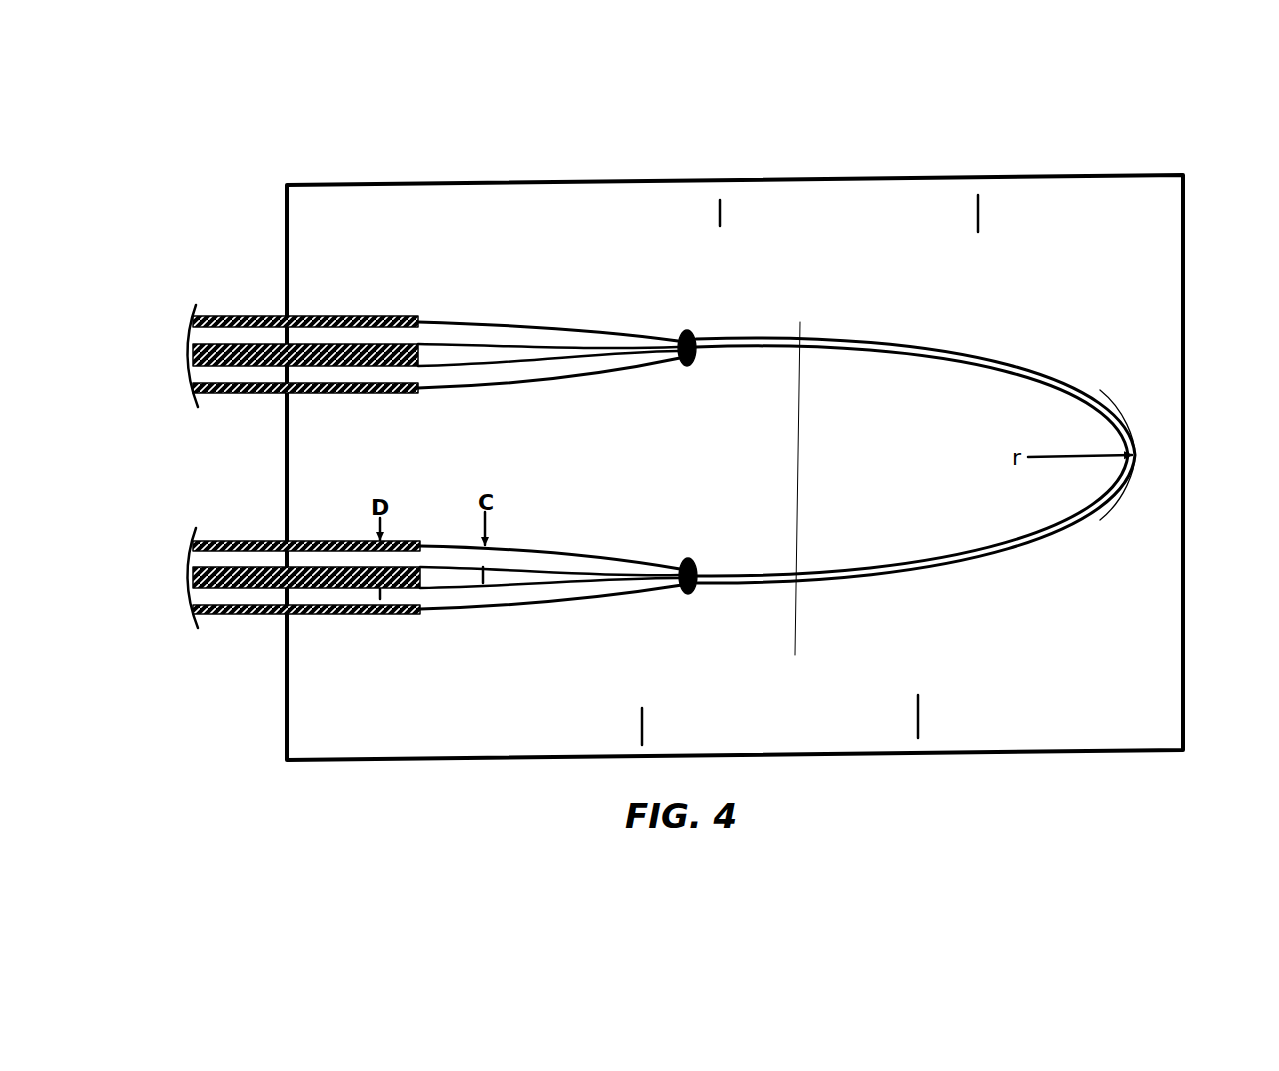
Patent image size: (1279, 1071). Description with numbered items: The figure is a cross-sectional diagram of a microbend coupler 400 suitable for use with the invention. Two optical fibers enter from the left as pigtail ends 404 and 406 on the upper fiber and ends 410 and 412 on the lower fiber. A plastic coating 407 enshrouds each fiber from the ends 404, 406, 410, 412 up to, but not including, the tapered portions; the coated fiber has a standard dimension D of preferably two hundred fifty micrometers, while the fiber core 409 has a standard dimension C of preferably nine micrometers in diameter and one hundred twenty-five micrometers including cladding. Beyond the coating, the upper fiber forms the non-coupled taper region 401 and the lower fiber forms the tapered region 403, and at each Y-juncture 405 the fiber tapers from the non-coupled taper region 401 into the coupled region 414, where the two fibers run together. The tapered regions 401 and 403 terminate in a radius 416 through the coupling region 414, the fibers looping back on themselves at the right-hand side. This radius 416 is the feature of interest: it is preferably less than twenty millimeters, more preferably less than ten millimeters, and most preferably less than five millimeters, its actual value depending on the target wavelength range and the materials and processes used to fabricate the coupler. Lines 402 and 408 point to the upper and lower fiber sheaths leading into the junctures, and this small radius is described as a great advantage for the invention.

The microbend coupler 400 is at (1110, 300).
The non-coupled taper region 401 is at (960, 215).
The first outer sheath 402 is at (604, 333).
The tapered region 403 is at (905, 722).
The pigtail end 404 is at (238, 300).
The Y-juncture 405 is at (722, 285).
The pigtail end 406 is at (245, 412).
The plastic coating 407 is at (365, 313).
The second outer sheath 408 is at (606, 590).
The fiber core 409 is at (549, 553).
The fiber end 410 is at (224, 510).
The fiber end 412 is at (410, 641).
The coupled region 414 is at (905, 527).
The radius 416 is at (1139, 453).